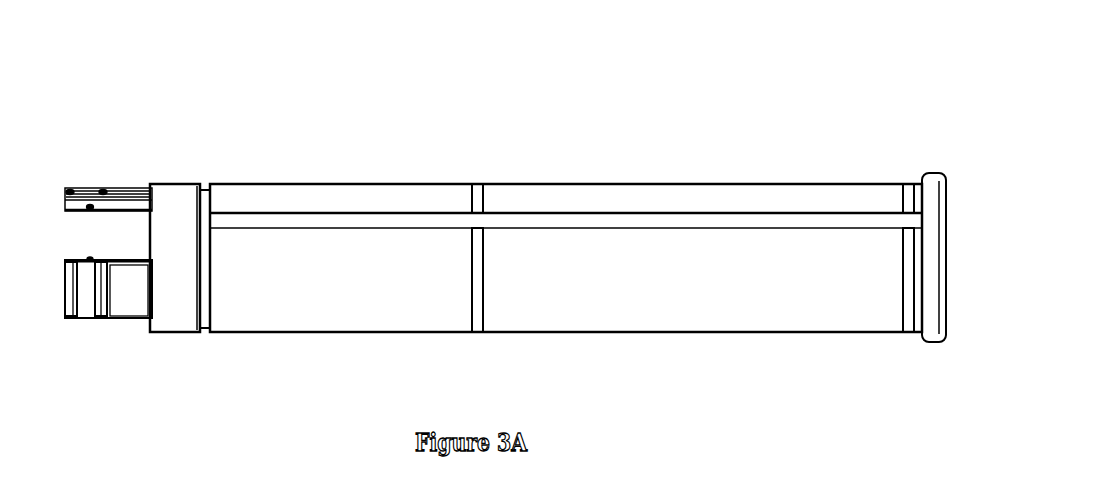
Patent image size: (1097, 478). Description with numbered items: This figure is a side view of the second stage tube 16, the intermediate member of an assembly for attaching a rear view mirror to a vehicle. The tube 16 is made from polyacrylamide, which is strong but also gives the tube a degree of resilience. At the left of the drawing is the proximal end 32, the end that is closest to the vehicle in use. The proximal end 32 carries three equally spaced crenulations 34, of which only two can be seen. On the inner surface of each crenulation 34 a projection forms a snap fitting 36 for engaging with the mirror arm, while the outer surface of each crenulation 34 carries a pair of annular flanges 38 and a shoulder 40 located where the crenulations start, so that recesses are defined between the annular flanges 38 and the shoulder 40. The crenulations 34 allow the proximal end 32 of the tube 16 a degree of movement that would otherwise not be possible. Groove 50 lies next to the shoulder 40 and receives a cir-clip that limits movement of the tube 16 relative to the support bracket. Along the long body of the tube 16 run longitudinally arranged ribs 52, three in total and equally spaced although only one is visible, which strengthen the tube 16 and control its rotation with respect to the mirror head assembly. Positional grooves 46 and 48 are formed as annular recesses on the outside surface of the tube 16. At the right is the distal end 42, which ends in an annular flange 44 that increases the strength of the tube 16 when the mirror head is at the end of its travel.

The second stage tube 16 is at (695, 73).
The proximal end 32 is at (199, 93).
The crenulations 34 is at (76, 249).
The snap fitting 36 is at (93, 219).
The annular flanges 38 is at (101, 326).
The shoulder 40 is at (146, 184).
The distal end 42 is at (887, 392).
The annular flange 44 is at (932, 163).
The positional groove 46 is at (906, 175).
The positional groove 48 is at (481, 176).
The groove 50 is at (209, 176).
The ribs 52 is at (287, 214).